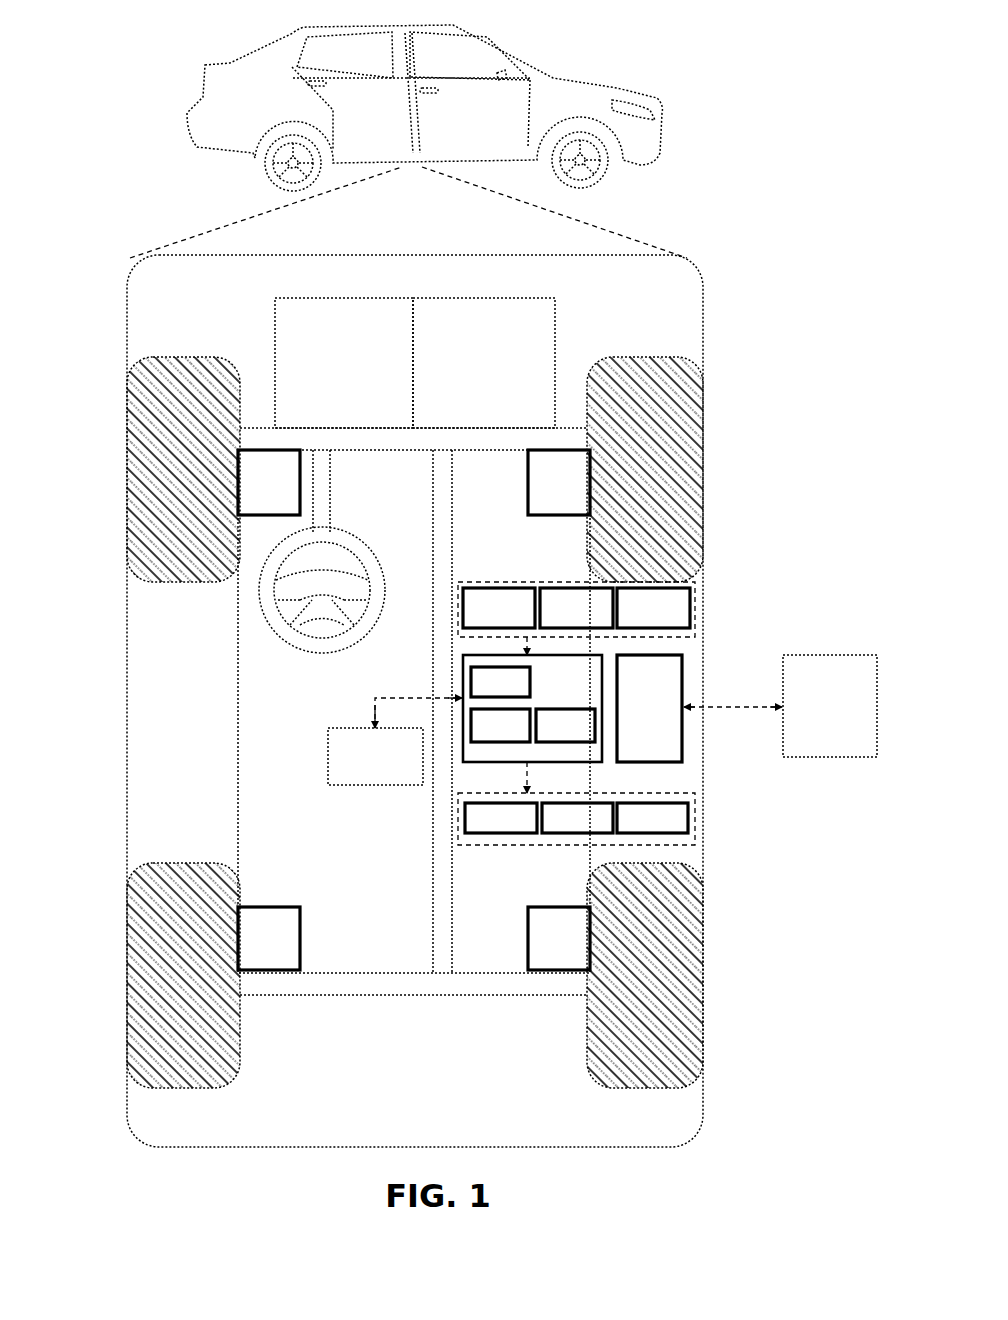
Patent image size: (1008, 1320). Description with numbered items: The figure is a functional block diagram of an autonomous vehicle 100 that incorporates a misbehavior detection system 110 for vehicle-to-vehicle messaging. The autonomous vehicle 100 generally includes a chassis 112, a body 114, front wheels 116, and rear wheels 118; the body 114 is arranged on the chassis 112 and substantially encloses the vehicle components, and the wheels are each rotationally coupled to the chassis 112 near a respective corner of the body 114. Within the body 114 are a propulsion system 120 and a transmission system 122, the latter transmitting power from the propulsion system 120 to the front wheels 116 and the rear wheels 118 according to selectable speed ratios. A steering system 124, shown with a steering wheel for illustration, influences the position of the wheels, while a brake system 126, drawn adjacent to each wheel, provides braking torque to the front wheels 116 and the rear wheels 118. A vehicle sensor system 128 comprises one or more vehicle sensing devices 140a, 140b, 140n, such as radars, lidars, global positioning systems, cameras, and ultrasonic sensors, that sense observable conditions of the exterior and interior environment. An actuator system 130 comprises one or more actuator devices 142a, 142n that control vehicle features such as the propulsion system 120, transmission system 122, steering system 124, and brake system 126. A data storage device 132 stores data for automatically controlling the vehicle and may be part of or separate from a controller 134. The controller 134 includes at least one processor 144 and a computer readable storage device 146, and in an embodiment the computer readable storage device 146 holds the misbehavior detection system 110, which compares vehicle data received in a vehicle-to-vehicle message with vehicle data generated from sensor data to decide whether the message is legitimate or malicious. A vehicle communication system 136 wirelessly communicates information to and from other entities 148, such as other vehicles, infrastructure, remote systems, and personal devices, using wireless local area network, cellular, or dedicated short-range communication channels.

The autonomous vehicle 100 is at (200, 97).
The misbehavior detection system 110 is at (485, 691).
The chassis 112 is at (425, 832).
The body 114 is at (122, 663).
The front wheels 116 is at (183, 357).
The rear wheels 118 is at (183, 1088).
The propulsion system 120 is at (325, 371).
The transmission system 122 is at (462, 371).
The steering system 124 is at (340, 512).
The brake system 126 is at (254, 492).
The vehicle sensor system 128 is at (576, 601).
The actuator system 130 is at (576, 821).
The data storage device 132 is at (360, 766).
The controller 134 is at (532, 708).
The vehicle communication system 136 is at (635, 717).
The vehicle sensing device 140a is at (480, 617).
The vehicle sensing device 140b is at (558, 617).
The vehicle sensing device 140n is at (634, 617).
The actuator device 142a is at (482, 827).
The actuator device 142n is at (633, 827).
The processor 144 is at (485, 735).
The computer readable storage device 146 is at (551, 735).
The other entities 148 is at (815, 716).